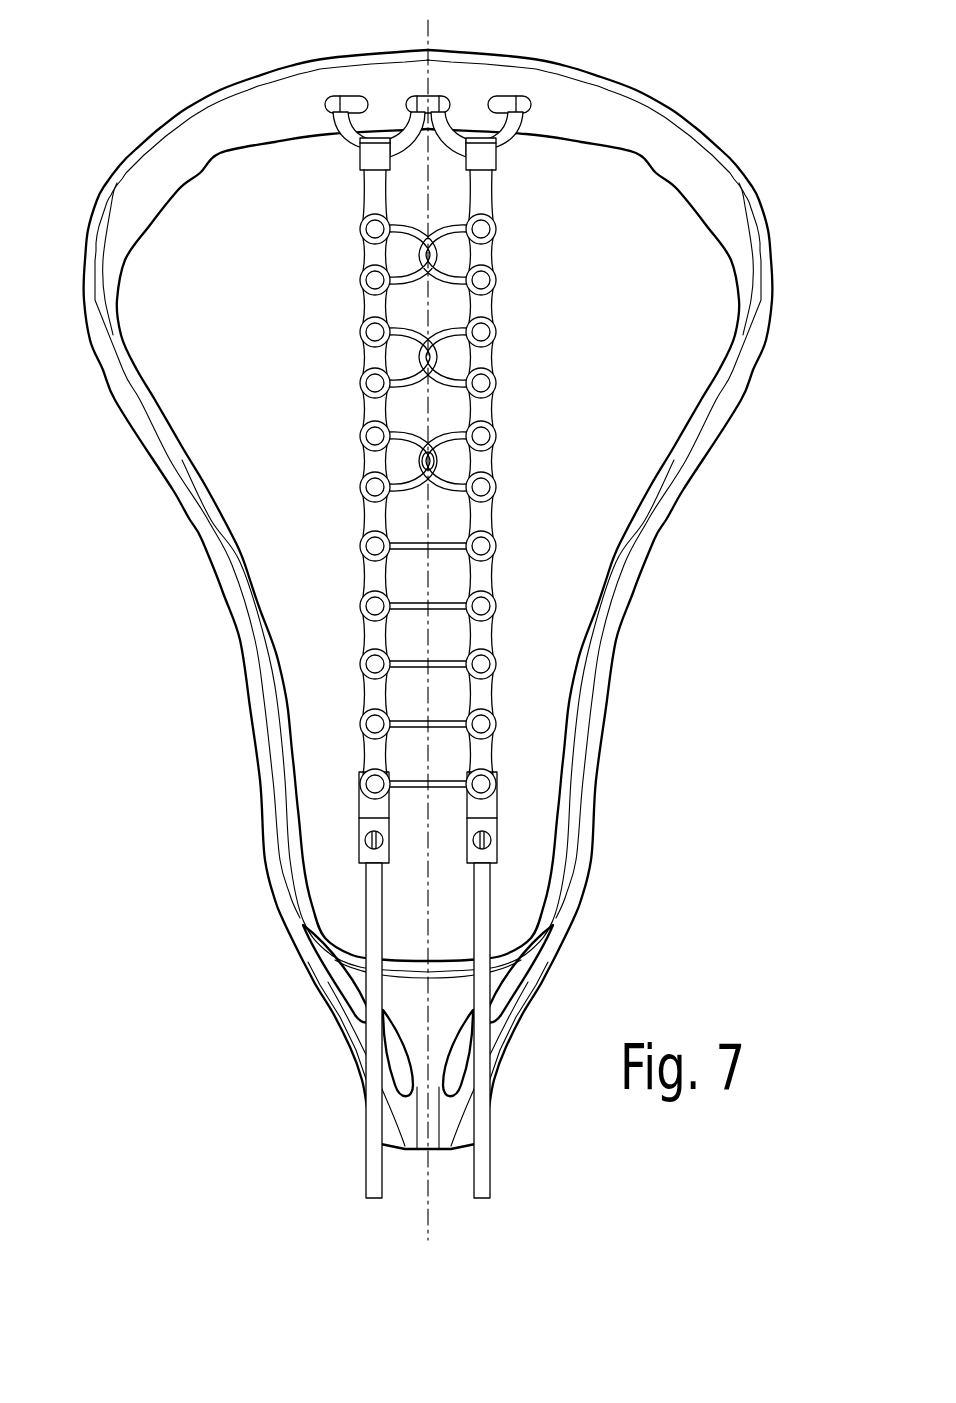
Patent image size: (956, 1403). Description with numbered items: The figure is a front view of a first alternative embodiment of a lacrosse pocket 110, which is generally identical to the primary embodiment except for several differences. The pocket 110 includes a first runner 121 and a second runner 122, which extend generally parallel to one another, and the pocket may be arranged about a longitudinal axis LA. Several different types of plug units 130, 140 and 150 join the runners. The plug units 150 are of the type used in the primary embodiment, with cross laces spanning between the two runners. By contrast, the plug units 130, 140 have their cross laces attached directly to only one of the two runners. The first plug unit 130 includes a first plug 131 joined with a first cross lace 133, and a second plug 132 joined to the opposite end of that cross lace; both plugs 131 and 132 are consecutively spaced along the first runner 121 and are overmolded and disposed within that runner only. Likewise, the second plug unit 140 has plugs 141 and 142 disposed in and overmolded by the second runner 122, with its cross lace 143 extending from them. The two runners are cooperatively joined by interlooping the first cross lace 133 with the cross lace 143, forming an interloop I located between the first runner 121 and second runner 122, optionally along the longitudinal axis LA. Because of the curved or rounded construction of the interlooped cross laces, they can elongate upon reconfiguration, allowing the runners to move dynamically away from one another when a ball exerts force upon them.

The lacrosse pocket 110 is at (318, 248).
The longitudinal axis LA is at (432, 42).
The first runner 121 is at (378, 136).
The second runner 122 is at (474, 136).
The first plug unit 130 is at (360, 443).
The first plug 131 is at (372, 430).
The second plug 132 is at (362, 488).
The first cross lace 133 is at (412, 437).
The second plug unit 140 is at (501, 458).
The plug of second plug unit 141 is at (484, 432).
The plug of second plug unit 142 is at (485, 488).
The cross lace of second plug unit 143 is at (454, 488).
The interloop I is at (436, 462).
The plug unit 150 is at (356, 548).